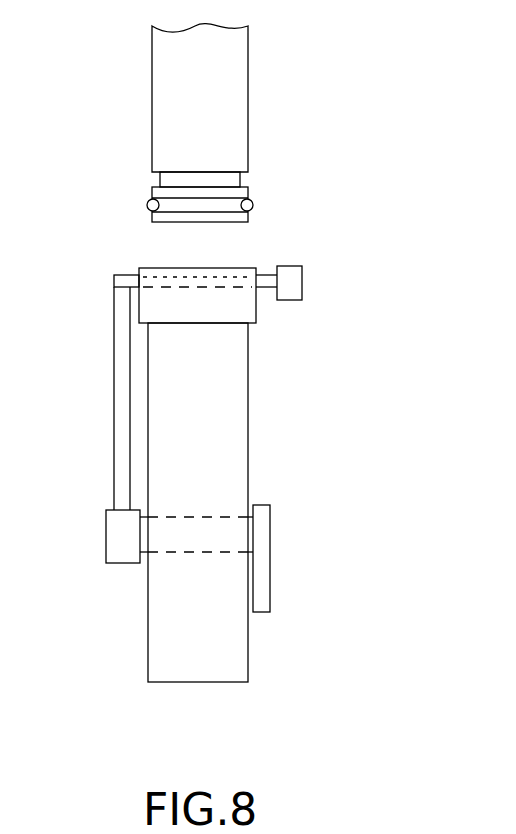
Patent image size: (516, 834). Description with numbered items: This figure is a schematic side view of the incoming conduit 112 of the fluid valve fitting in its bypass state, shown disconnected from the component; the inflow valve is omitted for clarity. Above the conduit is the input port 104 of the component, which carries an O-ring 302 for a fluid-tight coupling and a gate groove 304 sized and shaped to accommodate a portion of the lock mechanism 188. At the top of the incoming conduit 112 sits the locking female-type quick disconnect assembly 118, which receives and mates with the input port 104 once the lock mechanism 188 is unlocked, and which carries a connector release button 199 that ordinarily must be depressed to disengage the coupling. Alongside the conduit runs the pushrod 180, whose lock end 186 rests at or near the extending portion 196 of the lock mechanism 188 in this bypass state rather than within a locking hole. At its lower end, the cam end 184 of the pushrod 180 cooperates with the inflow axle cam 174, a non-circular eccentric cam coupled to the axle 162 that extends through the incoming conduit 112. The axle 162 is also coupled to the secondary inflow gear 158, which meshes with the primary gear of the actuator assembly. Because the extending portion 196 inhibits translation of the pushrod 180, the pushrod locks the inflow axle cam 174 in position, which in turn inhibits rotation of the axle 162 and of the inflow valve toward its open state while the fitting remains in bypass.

The input port 104 is at (248, 84).
The gate groove 304 is at (162, 178).
The O-ring 302 is at (253, 204).
The quick disconnect assembly 118 is at (256, 307).
The lock mechanism 188 is at (266, 260).
The connector release button 199 is at (302, 283).
The extending portion 196 is at (123, 275).
The lock end 186 is at (100, 294).
The pushrod 180 is at (115, 312).
The incoming conduit 112 is at (222, 420).
The inflow axle cam 174 is at (106, 540).
The cam end 184 is at (91, 495).
The axle 162 is at (193, 527).
The secondary inflow gear 158 is at (270, 577).